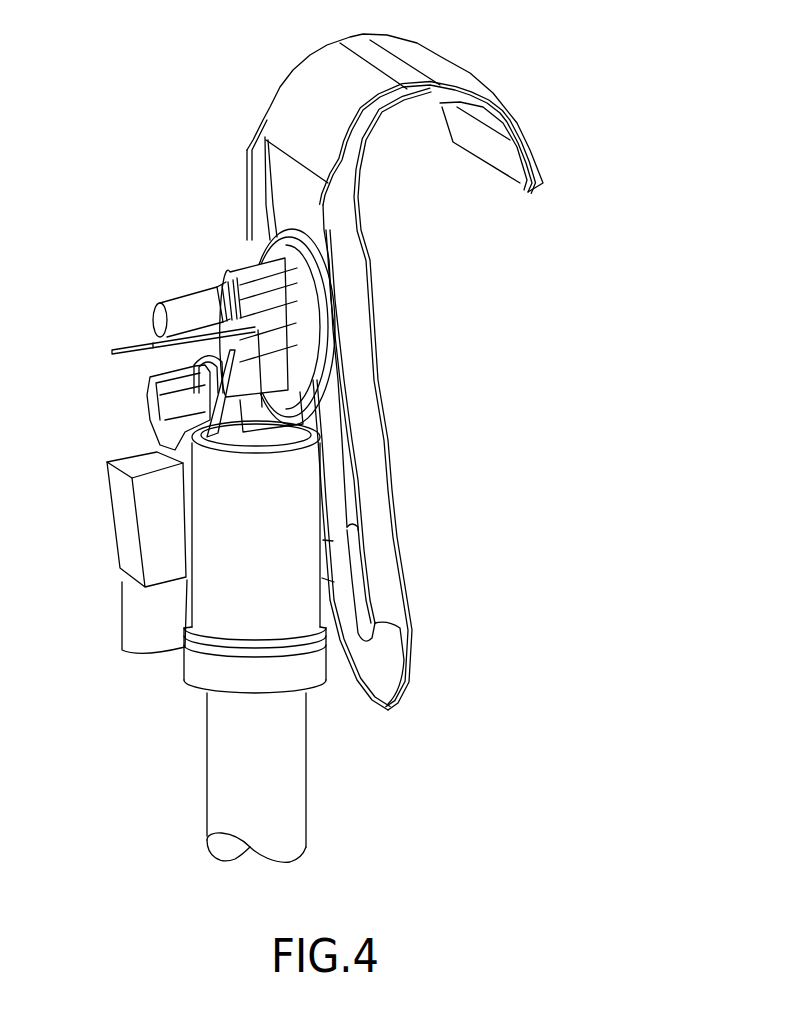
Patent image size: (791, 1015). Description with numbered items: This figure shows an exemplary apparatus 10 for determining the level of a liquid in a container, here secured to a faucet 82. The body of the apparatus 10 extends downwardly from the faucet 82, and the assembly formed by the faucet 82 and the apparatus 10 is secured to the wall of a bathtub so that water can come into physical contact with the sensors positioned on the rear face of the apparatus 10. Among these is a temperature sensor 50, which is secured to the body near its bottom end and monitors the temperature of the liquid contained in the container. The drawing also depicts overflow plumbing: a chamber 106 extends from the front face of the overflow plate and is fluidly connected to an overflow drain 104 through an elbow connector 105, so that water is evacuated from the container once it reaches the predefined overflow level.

The apparatus 10 is at (361, 361).
The temperature sensor 50 is at (368, 640).
The faucet 82 is at (325, 72).
The overflow drain 104 is at (293, 803).
The elbow connector 105 is at (255, 280).
The chamber 106 is at (210, 470).